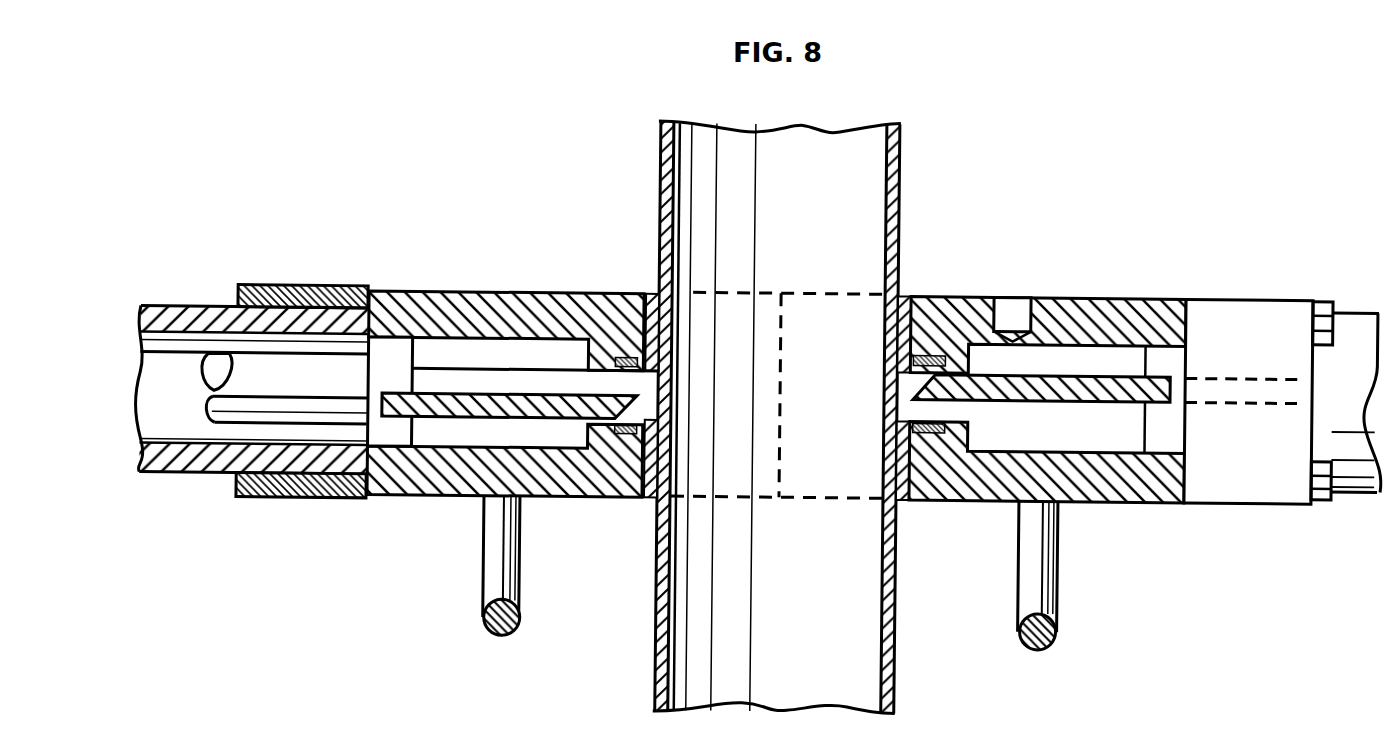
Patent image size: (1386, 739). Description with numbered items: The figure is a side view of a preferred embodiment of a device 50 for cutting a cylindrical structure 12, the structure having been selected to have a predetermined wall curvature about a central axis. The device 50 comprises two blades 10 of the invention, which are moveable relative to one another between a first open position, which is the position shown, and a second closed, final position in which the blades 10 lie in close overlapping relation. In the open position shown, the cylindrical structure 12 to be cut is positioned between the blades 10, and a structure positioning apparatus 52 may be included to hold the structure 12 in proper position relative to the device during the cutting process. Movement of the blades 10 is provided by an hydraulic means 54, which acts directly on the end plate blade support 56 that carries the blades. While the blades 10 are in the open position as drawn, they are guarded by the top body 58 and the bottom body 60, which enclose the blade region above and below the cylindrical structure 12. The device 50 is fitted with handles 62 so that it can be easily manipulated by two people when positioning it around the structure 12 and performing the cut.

The blade 10 is at (503, 418).
The cylindrical structure 12 is at (897, 152).
The device 50 is at (499, 258).
The structure positioning apparatus 52 is at (808, 334).
The hydraulic means 54 is at (310, 394).
The end plate blade support 56 is at (402, 385).
The top body 58 is at (613, 499).
The bottom body 60 is at (591, 295).
The handles 62 is at (485, 626).